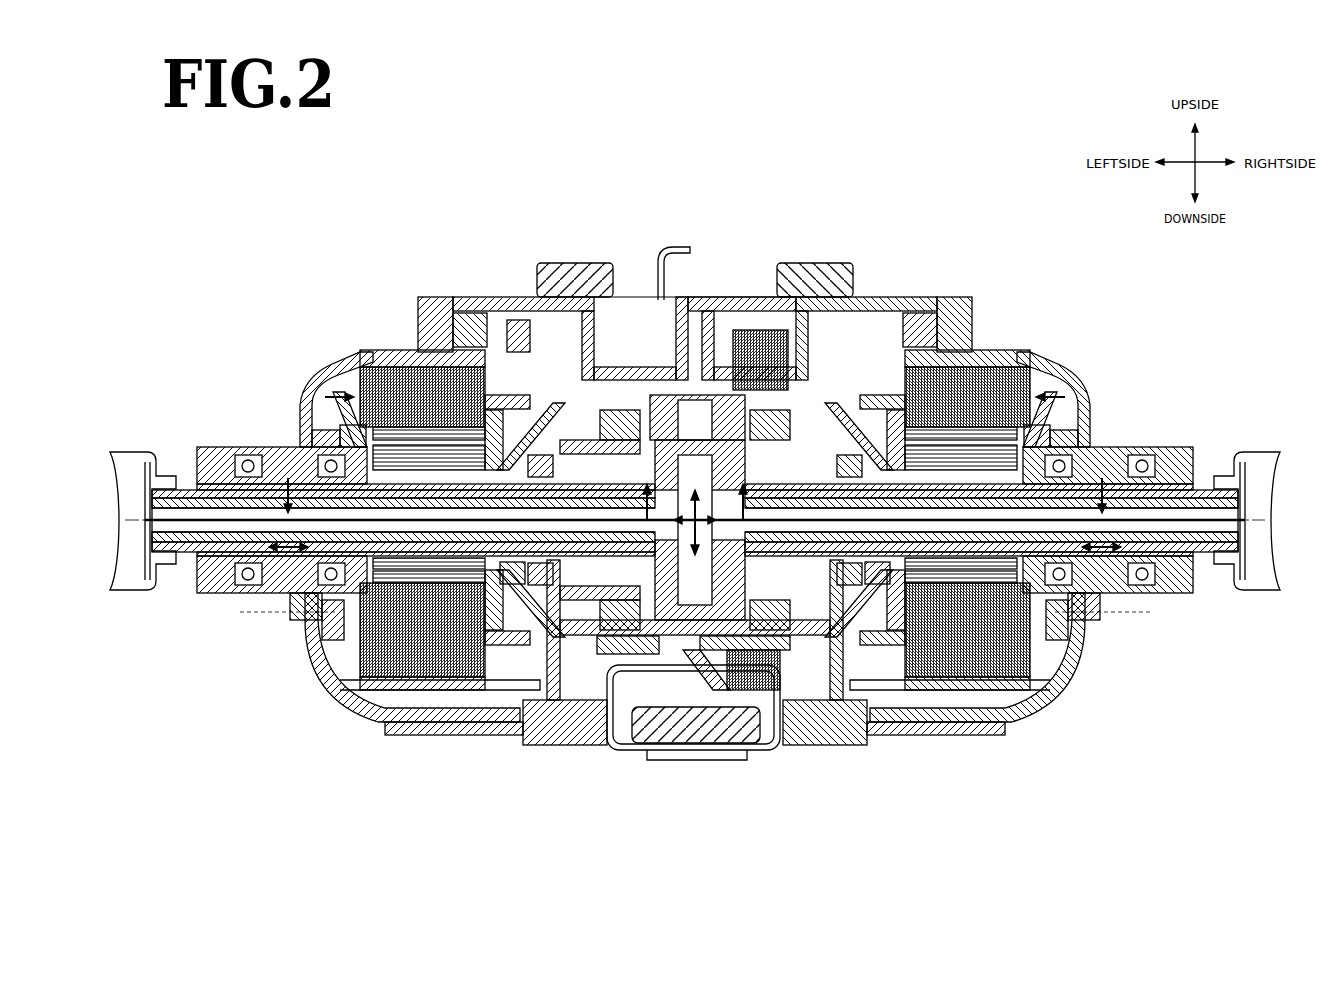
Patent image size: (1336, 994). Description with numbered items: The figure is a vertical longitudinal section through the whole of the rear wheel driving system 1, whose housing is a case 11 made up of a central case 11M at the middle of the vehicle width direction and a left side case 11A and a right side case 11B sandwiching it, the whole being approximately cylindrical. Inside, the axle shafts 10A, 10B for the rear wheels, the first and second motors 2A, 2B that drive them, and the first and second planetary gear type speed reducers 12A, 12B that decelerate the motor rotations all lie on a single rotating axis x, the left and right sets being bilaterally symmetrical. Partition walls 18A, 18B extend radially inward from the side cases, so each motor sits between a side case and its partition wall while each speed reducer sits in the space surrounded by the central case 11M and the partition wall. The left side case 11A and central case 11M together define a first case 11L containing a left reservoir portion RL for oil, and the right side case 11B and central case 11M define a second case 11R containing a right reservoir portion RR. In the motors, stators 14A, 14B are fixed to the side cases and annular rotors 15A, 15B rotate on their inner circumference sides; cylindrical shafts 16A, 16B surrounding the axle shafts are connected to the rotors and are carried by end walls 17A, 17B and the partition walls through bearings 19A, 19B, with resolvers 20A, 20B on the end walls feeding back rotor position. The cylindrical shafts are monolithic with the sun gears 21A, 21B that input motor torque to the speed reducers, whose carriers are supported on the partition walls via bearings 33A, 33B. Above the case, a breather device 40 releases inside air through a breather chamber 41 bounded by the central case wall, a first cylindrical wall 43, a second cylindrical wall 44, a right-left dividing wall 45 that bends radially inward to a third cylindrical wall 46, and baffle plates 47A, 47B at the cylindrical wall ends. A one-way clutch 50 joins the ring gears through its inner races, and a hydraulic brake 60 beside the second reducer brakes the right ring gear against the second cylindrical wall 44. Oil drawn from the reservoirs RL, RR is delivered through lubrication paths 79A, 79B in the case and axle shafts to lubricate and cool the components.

The rear wheel driving system 1 is at (1004, 186).
The rotating axis x is at (180, 518).
The first motor 2A is at (400, 352).
The second motor 2B is at (990, 352).
The axle shaft 10A is at (182, 545).
The axle shaft 10B is at (1210, 545).
The case 11 is at (704, 775).
The left side case 11A is at (425, 736).
The right side case 11B is at (960, 736).
The first case 11L is at (368, 727).
The central case 11M is at (650, 762).
The second case 11R is at (1022, 727).
The first planetary gear type speed reducer 12A is at (568, 338).
The second planetary gear type speed reducer 12B is at (820, 338).
The stator 14A is at (370, 380).
The stator 14B is at (1020, 380).
The rotor 15A is at (345, 420).
The rotor 15B is at (1045, 420).
The cylindrical shaft 16A is at (330, 447).
The cylindrical shaft 16B is at (1060, 447).
The end wall 17A is at (325, 372).
The end wall 17B is at (1065, 372).
The partition wall 18A is at (505, 305).
The partition wall 18B is at (885, 305).
The bearing 19A is at (300, 570).
The bearing 19B is at (1085, 570).
The resolver 20A is at (330, 605).
The resolver 20B is at (1060, 605).
The sun gear 21A is at (560, 560).
The sun gear 21B is at (830, 560).
The bearing 33A is at (535, 600).
The bearing 33B is at (855, 600).
The breather device 40 is at (668, 238).
The breather chamber 41 is at (660, 310).
The first cylindrical wall 43 is at (610, 330).
The second cylindrical wall 44 is at (765, 400).
The right-left dividing wall 45 is at (735, 320).
The third cylindrical wall 46 is at (700, 320).
The baffle plate 47A is at (535, 320).
The baffle plate 47B is at (790, 330).
The one-way clutch 50 is at (730, 390).
The hydraulic brake 60 is at (760, 330).
The lubrication path 79A is at (450, 490).
The lubrication path 79B is at (940, 490).
The left reservoir portion RL is at (360, 690).
The right reservoir portion RR is at (1035, 690).